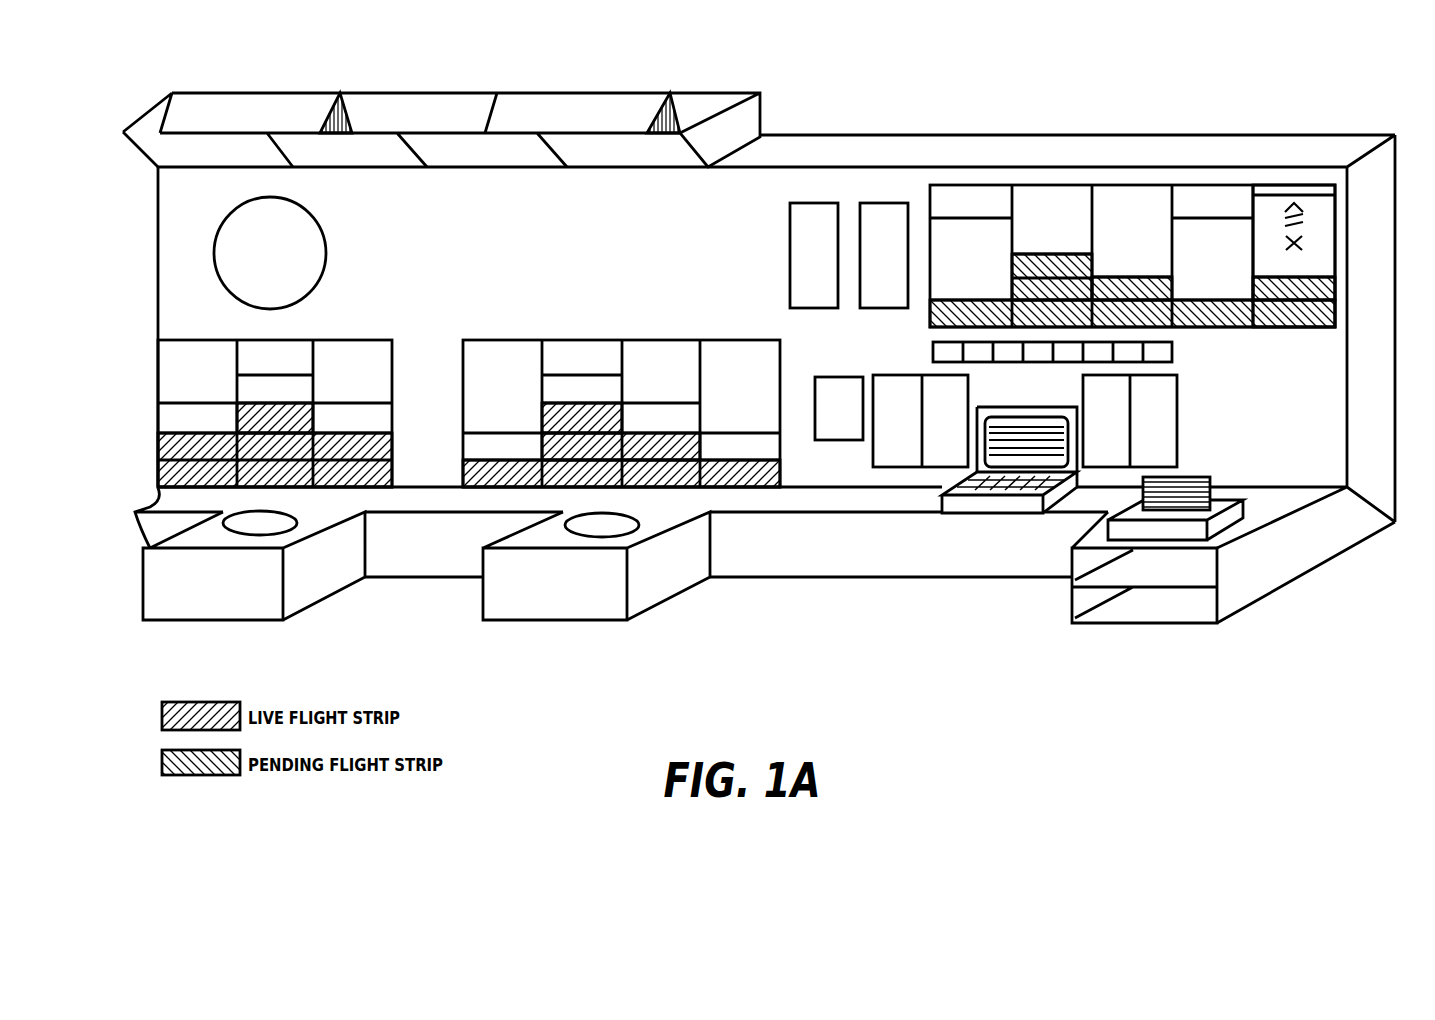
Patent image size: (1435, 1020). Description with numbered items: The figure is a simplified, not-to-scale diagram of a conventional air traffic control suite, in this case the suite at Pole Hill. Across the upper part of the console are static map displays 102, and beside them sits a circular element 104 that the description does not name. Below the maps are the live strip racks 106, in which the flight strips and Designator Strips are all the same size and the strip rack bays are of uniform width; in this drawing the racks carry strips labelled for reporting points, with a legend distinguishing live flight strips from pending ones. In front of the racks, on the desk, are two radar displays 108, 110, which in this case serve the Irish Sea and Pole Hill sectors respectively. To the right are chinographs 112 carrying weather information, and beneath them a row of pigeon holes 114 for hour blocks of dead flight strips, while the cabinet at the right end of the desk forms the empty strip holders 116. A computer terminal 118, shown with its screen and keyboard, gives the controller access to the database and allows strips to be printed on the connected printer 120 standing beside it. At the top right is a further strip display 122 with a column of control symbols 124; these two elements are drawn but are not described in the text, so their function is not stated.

The static map displays 102 is at (185, 213).
The speaker / clock 104 is at (318, 223).
The live strip racks 106 is at (460, 475).
The radar display 108 is at (246, 535).
The radar display 110 is at (586, 531).
The chinographs 112 is at (817, 203).
The pigeon holes 114 is at (1172, 352).
The empty strip holders 116 is at (1150, 570).
The computer terminal 118 is at (1000, 505).
The printer 120 is at (1230, 500).
The electronic flight strip display 122 is at (1132, 200).
The control symbol column 124 is at (1290, 194).